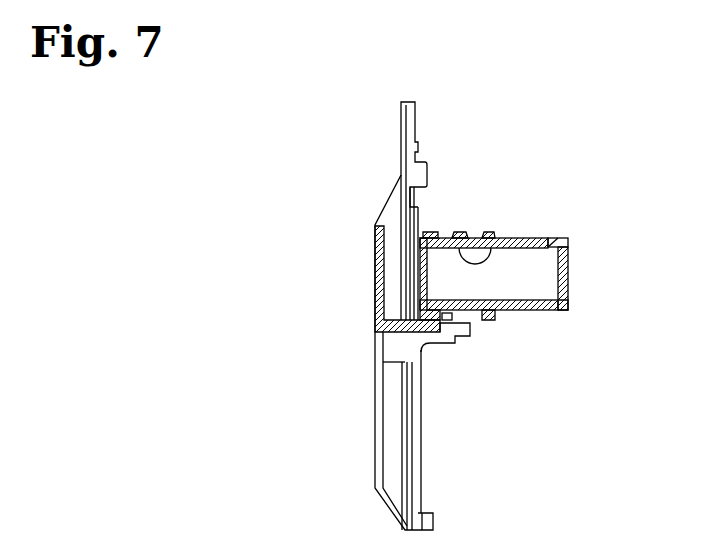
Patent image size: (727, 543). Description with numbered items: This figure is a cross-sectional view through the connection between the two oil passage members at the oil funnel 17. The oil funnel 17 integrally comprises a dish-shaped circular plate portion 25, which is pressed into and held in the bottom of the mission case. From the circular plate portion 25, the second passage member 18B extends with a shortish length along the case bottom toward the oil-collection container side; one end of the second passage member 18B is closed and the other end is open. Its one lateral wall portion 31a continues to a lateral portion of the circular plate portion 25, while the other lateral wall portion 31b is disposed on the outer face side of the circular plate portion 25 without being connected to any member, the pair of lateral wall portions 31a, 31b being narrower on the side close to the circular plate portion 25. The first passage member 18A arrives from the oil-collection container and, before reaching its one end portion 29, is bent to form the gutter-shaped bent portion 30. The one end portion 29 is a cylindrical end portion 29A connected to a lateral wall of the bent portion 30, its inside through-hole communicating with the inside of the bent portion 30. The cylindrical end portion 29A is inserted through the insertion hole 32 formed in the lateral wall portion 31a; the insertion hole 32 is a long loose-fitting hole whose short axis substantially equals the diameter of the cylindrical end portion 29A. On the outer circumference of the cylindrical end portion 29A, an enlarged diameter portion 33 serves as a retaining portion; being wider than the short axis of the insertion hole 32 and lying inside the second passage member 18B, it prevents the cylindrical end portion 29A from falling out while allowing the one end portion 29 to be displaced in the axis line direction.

The oil funnel 17 is at (333, 431).
The circular plate portion 25 is at (377, 420).
The first passage member 18A is at (555, 310).
The second passage member 18B is at (373, 265).
The one end portion 29 is at (556, 362).
The cylindrical end portion 29A is at (483, 320).
The bent portion 30 is at (570, 265).
The lateral wall portion 31a is at (457, 232).
The lateral wall portion 31b is at (372, 293).
The insertion hole 32 is at (497, 245).
The enlarged diameter portion 33 is at (445, 333).